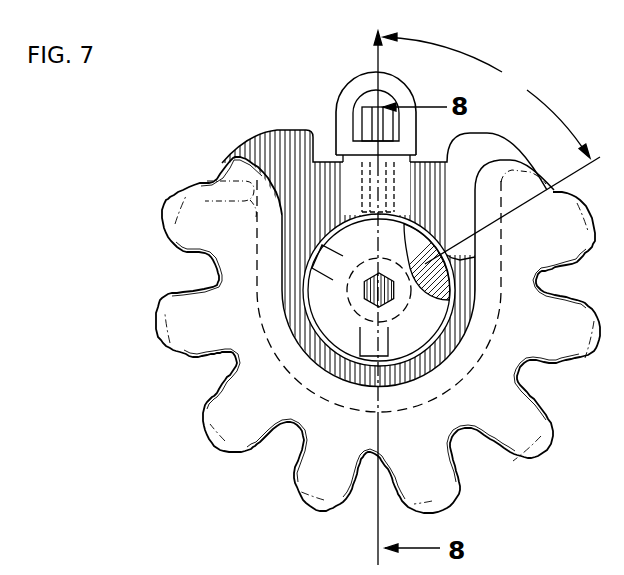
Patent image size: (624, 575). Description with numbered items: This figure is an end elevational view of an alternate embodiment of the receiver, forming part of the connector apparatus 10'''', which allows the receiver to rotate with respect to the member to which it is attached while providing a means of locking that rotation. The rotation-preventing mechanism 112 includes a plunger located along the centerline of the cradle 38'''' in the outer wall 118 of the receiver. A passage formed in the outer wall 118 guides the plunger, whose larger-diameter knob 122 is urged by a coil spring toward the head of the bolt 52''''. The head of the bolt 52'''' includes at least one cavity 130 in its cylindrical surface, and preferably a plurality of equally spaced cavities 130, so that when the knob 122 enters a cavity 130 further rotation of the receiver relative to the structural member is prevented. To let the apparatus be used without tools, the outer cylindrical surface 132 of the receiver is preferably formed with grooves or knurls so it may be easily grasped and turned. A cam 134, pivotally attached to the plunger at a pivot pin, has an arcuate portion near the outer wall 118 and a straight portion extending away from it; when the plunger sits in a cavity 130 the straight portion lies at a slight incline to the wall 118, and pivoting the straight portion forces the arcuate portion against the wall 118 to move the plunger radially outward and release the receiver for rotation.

The connector apparatus 10'''' is at (314, 372).
The cradle 38'''' is at (388, 251).
The bolt 52'''' is at (450, 300).
The preventing mechanism 112 is at (414, 89).
The outer wall 118 is at (398, 110).
The knob 122 is at (361, 296).
The cavity 130 is at (428, 252).
The outer cylindrical surface 132 is at (549, 442).
The cam 134 is at (341, 93).